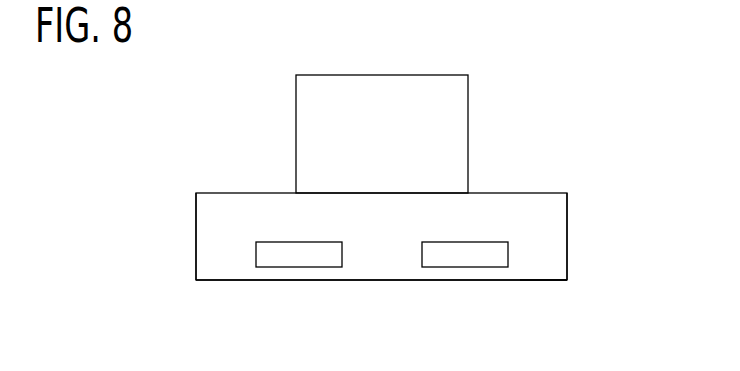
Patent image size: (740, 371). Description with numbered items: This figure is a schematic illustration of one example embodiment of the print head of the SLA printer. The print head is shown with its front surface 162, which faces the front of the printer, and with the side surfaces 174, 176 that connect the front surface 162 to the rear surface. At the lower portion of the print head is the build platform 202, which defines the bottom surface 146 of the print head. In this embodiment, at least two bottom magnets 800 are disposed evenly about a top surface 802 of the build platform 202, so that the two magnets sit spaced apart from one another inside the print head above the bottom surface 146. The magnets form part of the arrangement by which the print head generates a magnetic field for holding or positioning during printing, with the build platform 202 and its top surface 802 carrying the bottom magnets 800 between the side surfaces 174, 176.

The front surface 162 is at (398, 237).
The side surface 174 is at (196, 237).
The side surface 176 is at (567, 214).
The top surface 802 is at (538, 280).
The bottom surface 146 is at (388, 280).
The build platform 202 is at (300, 280).
The bottom magnets 800 is at (463, 268).